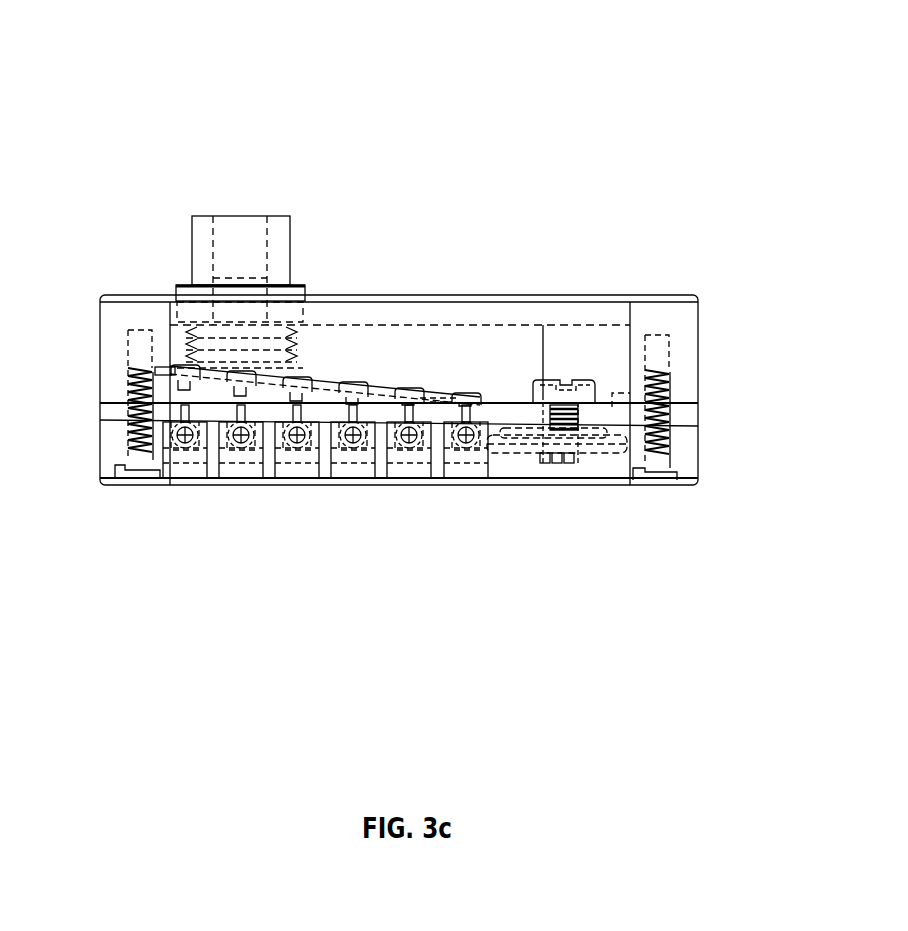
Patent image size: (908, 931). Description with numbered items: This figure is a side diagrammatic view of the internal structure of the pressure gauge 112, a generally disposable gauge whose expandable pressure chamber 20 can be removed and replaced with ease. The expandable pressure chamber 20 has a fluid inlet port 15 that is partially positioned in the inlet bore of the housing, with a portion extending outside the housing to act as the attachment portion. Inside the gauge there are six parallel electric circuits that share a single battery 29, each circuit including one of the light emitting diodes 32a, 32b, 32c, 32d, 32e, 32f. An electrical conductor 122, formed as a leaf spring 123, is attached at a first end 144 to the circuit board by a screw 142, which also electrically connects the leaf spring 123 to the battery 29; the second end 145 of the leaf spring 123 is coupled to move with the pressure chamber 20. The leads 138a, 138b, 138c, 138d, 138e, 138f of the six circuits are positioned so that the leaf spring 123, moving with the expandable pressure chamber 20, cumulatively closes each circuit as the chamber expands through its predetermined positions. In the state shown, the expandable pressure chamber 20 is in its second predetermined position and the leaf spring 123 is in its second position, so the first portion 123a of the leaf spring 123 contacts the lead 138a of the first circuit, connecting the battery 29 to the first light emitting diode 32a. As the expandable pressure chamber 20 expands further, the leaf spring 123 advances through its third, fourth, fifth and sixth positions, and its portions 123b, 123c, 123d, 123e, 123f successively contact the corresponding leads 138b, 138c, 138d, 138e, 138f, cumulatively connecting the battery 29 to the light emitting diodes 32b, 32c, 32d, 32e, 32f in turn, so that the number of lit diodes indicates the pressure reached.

The pressure gauge 112 is at (640, 287).
The fluid inlet port 15 is at (300, 196).
The expandable pressure chamber 20 is at (273, 347).
The screw 142 is at (458, 399).
The second end 145 is at (109, 304).
The leaf spring 123 is at (503, 327).
The lead 138f is at (283, 200).
The lead 138e is at (342, 251).
The lead 138d is at (383, 278).
The lead 138c is at (422, 301).
The lead 138b is at (471, 316).
The lead 138a is at (534, 339).
The electrical conductor 122 is at (507, 327).
The first end 144 is at (552, 470).
The battery 29 is at (600, 520).
The light emitting diode 32f is at (165, 476).
The light emitting diode 32e is at (205, 507).
The light emitting diode 32d is at (240, 547).
The light emitting diode 32c is at (282, 590).
The light emitting diode 32b is at (397, 562).
The light emitting diode 32a is at (538, 557).
The sixth portion of the leaf spring 123f is at (121, 445).
The fifth portion of the leaf spring 123e is at (179, 482).
The fourth portion of the leaf spring 123d is at (225, 522).
The third portion of the leaf spring 123c is at (260, 567).
The second portion of the leaf spring 123b is at (369, 546).
The first portion of the leaf spring 123a is at (424, 578).